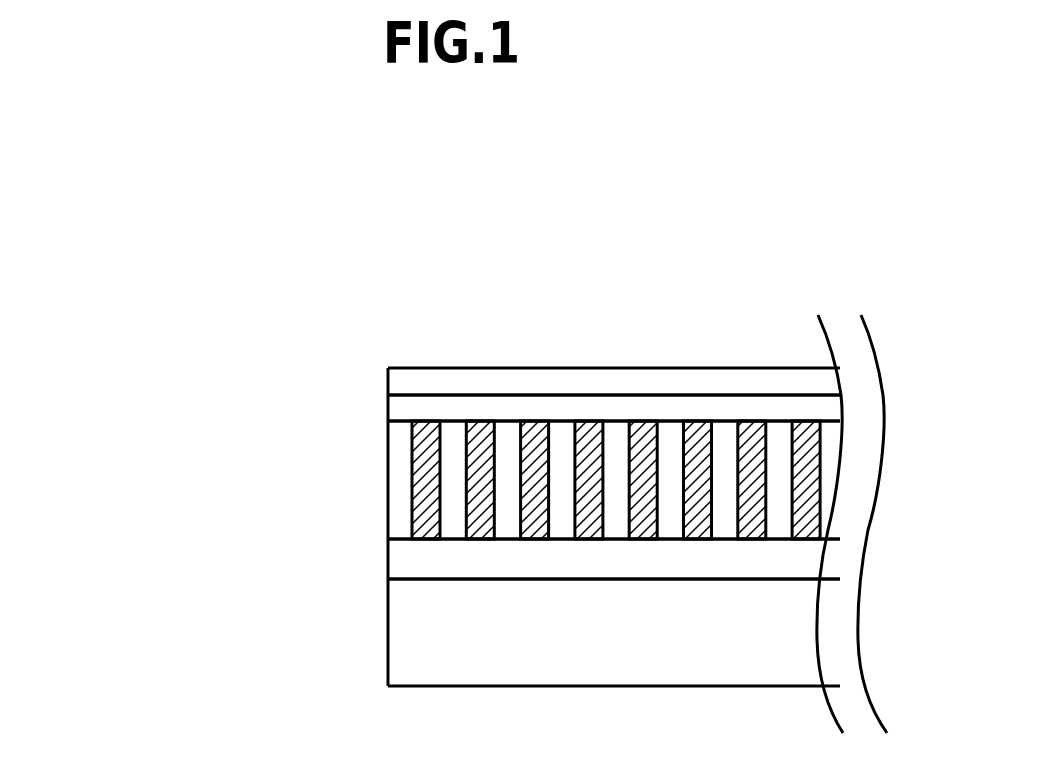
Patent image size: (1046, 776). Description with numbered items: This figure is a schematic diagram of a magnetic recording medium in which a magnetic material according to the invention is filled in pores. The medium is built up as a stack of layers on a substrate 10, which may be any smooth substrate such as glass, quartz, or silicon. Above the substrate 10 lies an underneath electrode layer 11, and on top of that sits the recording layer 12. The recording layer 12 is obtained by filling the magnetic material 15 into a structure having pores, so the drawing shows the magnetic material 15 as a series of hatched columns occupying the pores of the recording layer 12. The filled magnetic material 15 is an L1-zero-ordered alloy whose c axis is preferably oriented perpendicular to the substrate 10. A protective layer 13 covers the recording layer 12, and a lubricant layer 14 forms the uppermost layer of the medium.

The substrate 10 is at (403, 644).
The underneath electrode layer 11 is at (403, 564).
The recording layer 12 is at (403, 483).
The protective layer 13 is at (403, 412).
The lubricant layer 14 is at (474, 383).
The magnetic material 15 is at (695, 430).